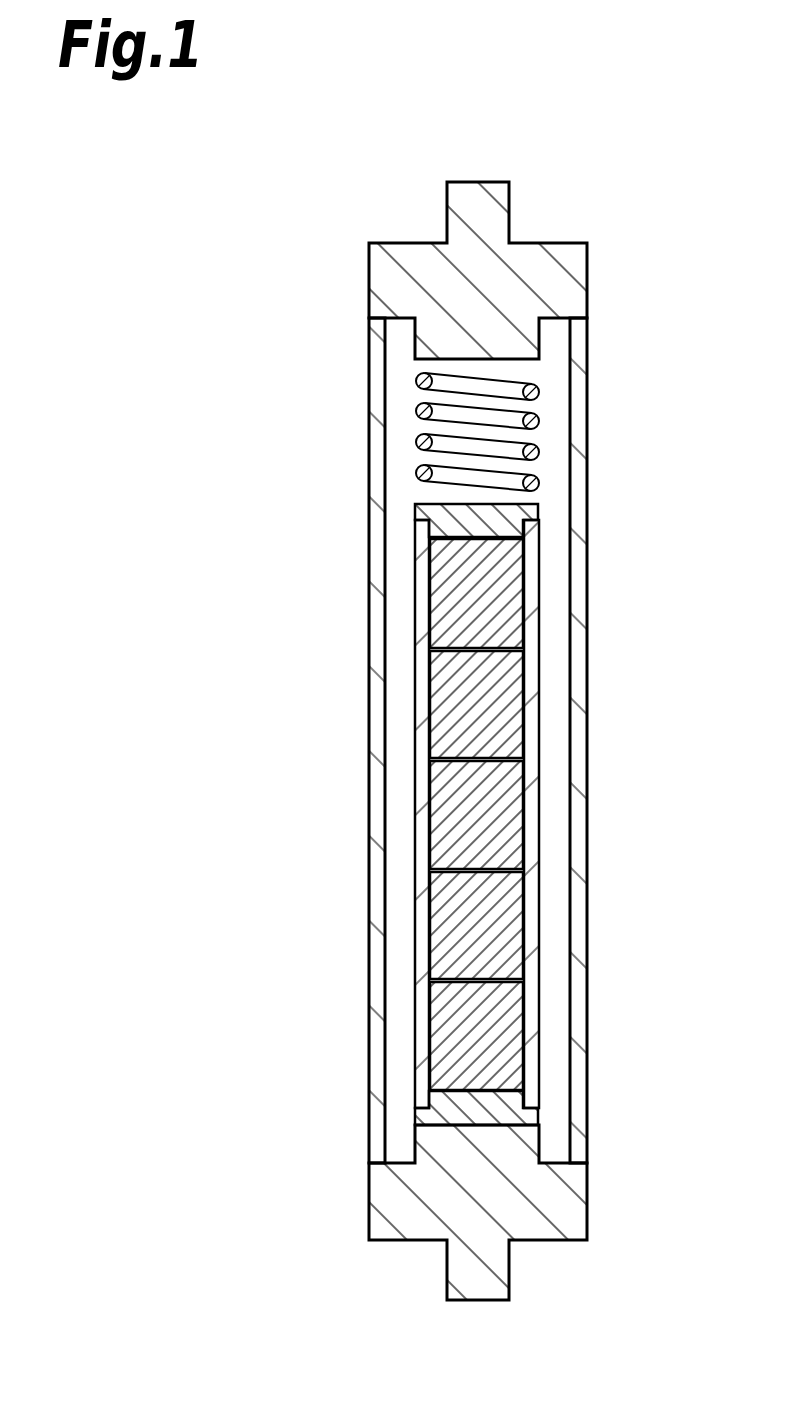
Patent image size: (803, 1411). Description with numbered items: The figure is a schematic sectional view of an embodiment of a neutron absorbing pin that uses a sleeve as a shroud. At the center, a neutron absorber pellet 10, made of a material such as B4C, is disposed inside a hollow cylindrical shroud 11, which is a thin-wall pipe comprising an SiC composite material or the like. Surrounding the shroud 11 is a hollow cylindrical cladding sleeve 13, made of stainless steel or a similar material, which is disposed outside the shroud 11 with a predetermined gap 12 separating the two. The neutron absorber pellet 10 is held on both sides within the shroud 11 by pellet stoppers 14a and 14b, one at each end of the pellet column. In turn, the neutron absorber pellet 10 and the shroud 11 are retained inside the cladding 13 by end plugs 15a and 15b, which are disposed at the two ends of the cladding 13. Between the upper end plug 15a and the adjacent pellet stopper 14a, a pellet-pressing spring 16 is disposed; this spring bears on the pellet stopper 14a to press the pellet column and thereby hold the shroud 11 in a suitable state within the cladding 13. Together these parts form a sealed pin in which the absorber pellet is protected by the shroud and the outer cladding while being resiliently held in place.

The neutron absorber pellet 10 is at (445, 917).
The shroud 11 is at (423, 632).
The gap 12 is at (553, 643).
The cladding sleeve 13 is at (378, 467).
The pellet stopper 14a is at (540, 507).
The pellet stopper 14b is at (510, 1117).
The end plug 15a is at (570, 270).
The end plug 15b is at (493, 1275).
The pellet-pressing spring 16 is at (542, 388).